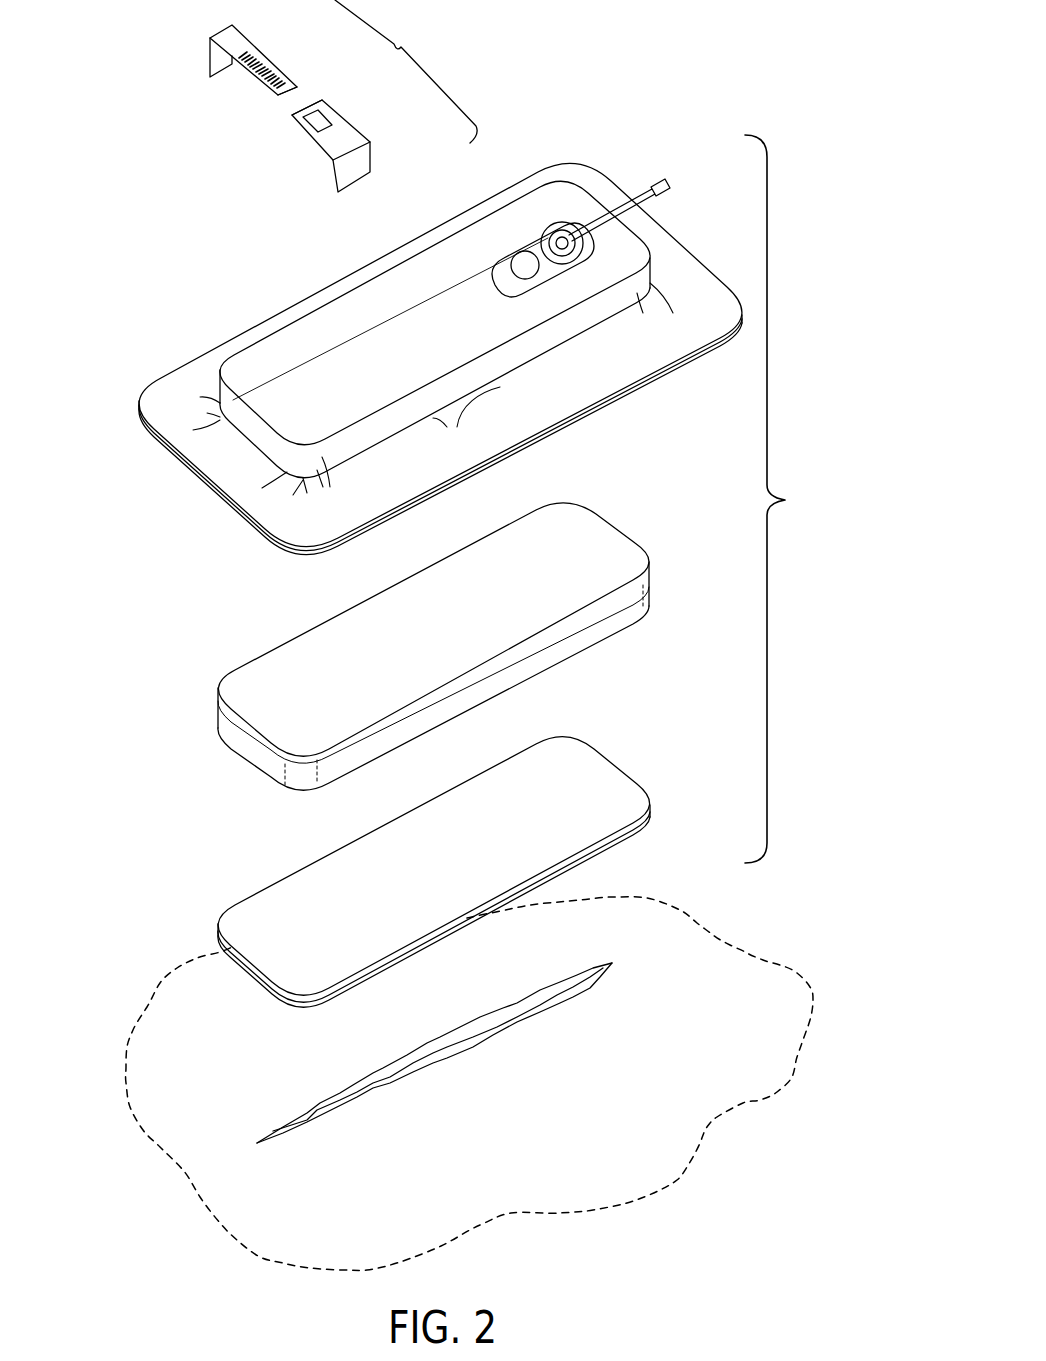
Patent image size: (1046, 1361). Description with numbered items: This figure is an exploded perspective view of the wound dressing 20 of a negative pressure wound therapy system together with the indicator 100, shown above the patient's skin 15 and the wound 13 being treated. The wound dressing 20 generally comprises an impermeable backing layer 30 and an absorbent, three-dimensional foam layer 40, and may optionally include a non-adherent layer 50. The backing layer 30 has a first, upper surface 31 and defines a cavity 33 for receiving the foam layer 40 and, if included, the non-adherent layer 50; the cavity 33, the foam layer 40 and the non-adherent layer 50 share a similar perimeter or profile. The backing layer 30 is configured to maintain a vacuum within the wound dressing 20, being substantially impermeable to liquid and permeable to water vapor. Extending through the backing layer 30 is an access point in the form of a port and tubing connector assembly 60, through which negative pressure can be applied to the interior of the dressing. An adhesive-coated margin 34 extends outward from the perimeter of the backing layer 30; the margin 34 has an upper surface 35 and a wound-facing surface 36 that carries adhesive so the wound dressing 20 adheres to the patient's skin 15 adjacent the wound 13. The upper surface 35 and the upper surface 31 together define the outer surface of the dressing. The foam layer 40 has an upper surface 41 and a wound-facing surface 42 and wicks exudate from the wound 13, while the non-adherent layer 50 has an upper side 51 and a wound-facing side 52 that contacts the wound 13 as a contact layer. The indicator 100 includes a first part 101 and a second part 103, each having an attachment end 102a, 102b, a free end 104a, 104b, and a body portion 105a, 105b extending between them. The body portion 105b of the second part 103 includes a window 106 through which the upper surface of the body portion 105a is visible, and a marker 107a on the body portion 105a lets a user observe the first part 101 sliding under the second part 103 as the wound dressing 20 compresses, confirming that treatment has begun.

The wound 13 is at (450, 1058).
The patient's skin 15 is at (469, 1084).
The wound dressing 20 is at (783, 499).
The backing layer 30 is at (424, 353).
The upper surface of backing layer 31 is at (250, 368).
The cavity 33 is at (424, 370).
The margin 34 is at (167, 448).
The upper surface of margin 35 is at (157, 393).
The wound-facing surface of margin 36 is at (203, 485).
The foam layer 40 is at (457, 657).
The upper surface of foam layer 41 is at (242, 686).
The wound-facing surface of foam layer 42 is at (257, 765).
The non-adherent layer 50 is at (440, 871).
The upper side of non-adherent layer 51 is at (255, 910).
The wound-facing side of non-adherent layer 52 is at (256, 975).
The port and tubing connector assembly 60 is at (564, 205).
The indicator 100 is at (302, 103).
The first part 101 is at (242, 81).
The attachment end of first part 102a is at (209, 58).
The attachment end of second part 102b is at (367, 173).
The second part 103 is at (345, 135).
The free end of first part 104a is at (285, 90).
The free end of second part 104b is at (307, 112).
The body portion of first part 105a is at (240, 43).
The body portion of second part 105b is at (347, 135).
The window 106 is at (330, 118).
The marker 107a is at (225, 82).